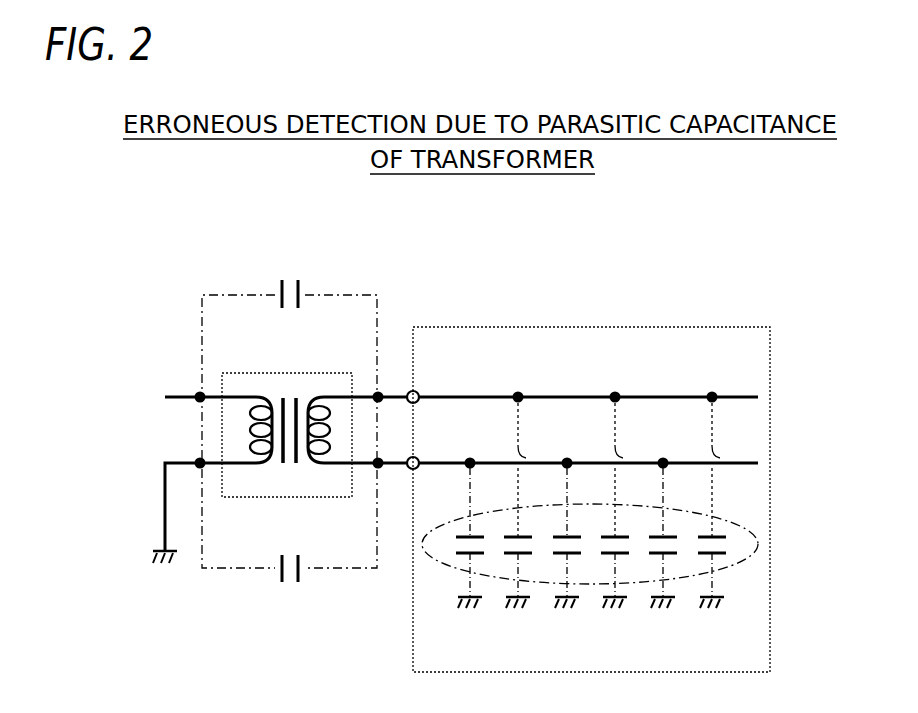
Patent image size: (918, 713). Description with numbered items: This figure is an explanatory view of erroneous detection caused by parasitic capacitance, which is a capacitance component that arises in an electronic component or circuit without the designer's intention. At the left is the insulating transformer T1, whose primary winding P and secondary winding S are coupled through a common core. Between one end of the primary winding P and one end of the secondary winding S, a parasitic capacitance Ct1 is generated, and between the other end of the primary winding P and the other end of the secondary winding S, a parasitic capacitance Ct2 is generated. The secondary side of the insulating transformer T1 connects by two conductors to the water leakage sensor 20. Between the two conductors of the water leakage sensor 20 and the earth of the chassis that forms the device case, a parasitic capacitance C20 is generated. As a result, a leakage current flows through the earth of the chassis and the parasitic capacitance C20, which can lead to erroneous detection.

The water leakage sensor 20 is at (585, 327).
The parasitic capacitance C20 is at (588, 586).
The parasitic capacitance Ct1 is at (288, 280).
The parasitic capacitance Ct2 is at (288, 586).
The insulating transformer T1 is at (287, 422).
The primary winding P is at (258, 451).
The secondary winding S is at (322, 451).